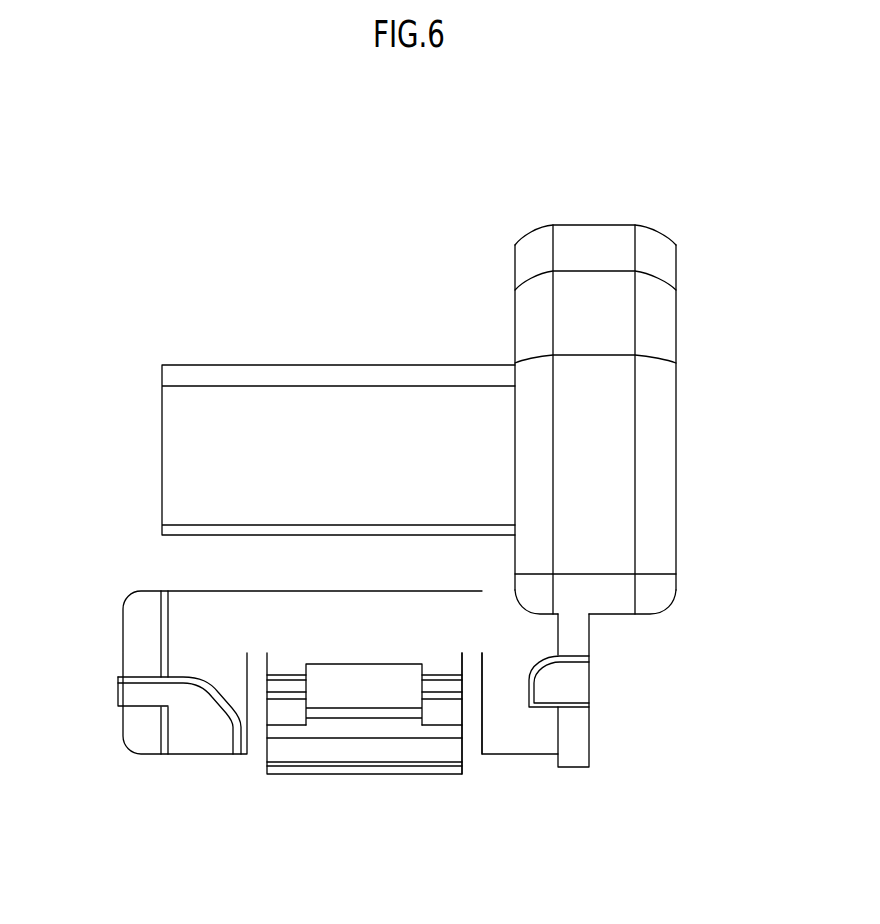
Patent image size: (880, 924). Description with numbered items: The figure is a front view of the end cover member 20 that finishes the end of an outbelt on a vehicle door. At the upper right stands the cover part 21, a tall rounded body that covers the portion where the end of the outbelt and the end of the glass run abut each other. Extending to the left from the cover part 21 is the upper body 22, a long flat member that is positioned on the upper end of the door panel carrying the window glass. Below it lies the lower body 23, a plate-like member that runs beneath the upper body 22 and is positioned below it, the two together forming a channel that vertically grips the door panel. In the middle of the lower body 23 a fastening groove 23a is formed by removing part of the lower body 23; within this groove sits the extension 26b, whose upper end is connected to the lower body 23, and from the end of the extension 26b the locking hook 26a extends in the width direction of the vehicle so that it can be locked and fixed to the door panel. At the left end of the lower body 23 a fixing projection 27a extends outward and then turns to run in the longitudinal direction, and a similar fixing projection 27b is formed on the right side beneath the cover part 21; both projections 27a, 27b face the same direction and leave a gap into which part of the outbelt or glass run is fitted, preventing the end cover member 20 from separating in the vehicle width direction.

The end cover member 20 is at (751, 154).
The cover part 21 is at (615, 437).
The upper body 22 is at (332, 411).
The lower body 23 is at (272, 613).
The fastening groove 23a is at (470, 692).
The locking hook 26a is at (370, 727).
The extension 26b is at (287, 690).
The fixing projection 27a is at (138, 697).
The fixing projection 27b is at (543, 690).